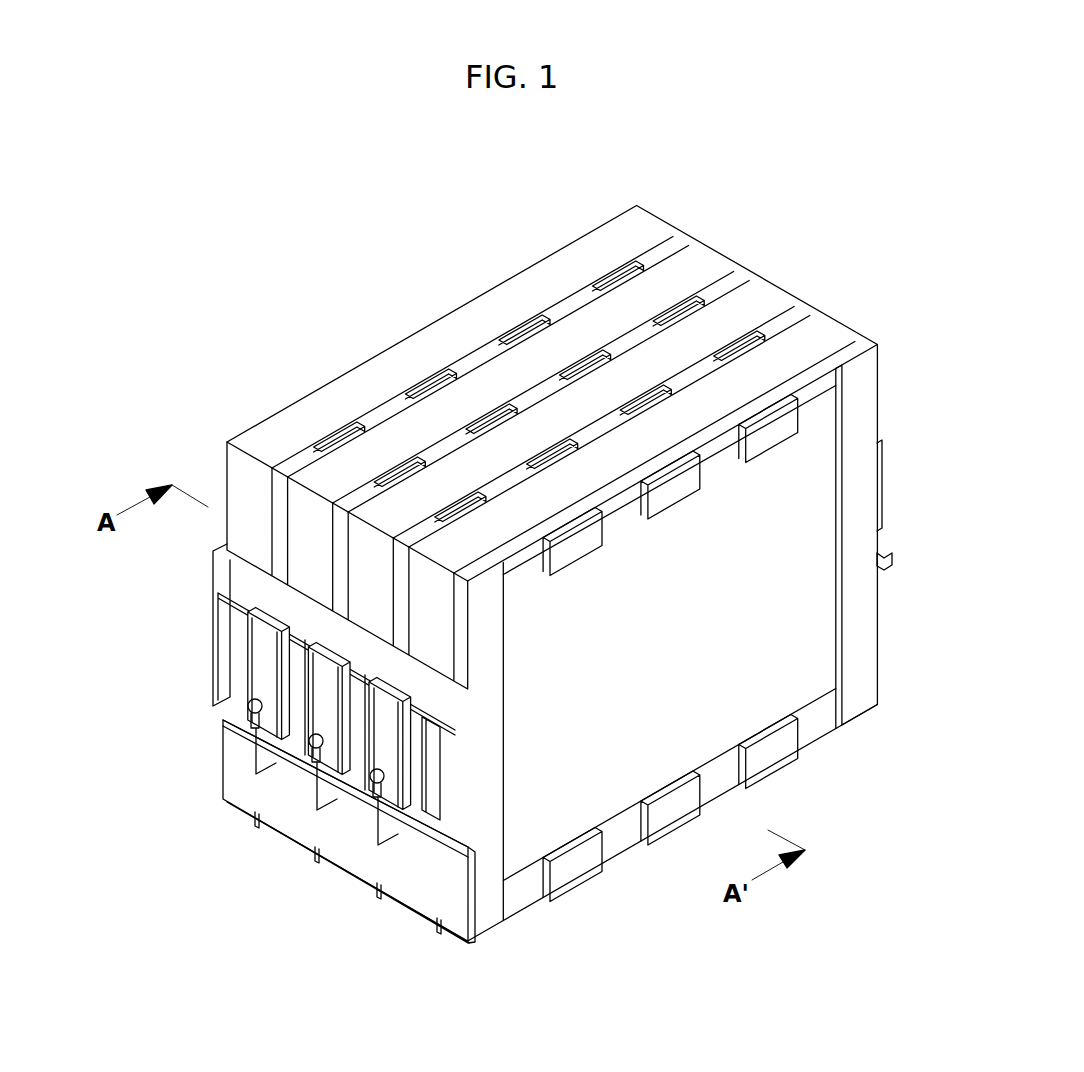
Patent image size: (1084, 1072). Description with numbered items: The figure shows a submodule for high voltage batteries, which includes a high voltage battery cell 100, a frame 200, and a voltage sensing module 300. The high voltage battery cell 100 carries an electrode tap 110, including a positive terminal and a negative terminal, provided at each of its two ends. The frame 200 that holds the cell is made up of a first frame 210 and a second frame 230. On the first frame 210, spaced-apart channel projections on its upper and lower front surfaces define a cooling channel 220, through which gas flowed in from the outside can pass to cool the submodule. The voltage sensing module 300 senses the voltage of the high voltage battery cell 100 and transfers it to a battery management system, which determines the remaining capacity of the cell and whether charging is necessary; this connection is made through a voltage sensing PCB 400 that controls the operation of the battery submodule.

The high voltage battery cell 100 is at (787, 660).
The electrode tap 110 is at (258, 630).
The frame 200 is at (866, 195).
The first frame 210 is at (847, 353).
The cooling channel 220 is at (500, 420).
The second frame 230 is at (712, 403).
The voltage sensing module 300 is at (373, 832).
The voltage sensing PCB 400 is at (437, 893).